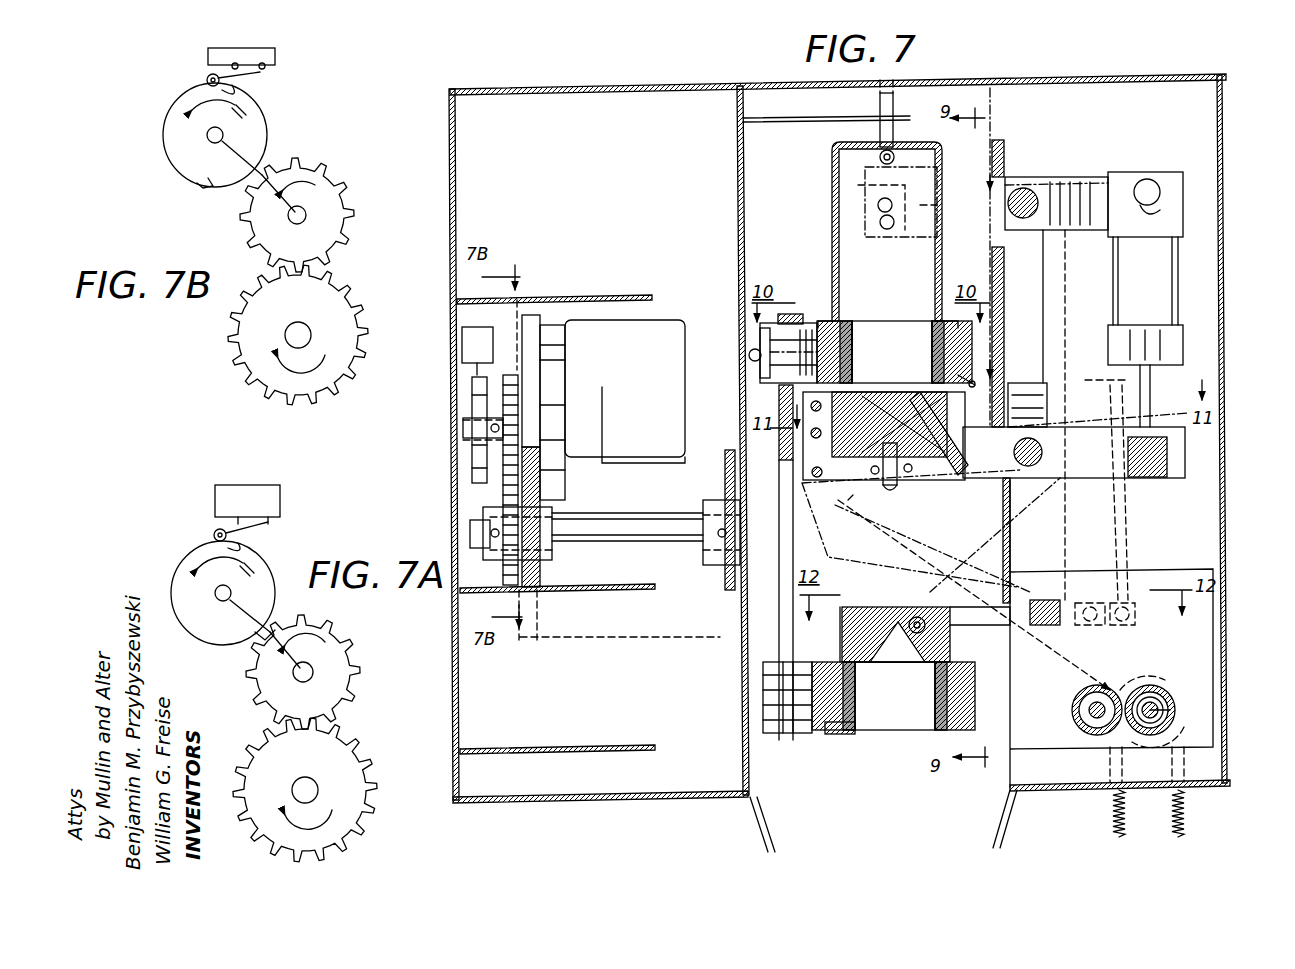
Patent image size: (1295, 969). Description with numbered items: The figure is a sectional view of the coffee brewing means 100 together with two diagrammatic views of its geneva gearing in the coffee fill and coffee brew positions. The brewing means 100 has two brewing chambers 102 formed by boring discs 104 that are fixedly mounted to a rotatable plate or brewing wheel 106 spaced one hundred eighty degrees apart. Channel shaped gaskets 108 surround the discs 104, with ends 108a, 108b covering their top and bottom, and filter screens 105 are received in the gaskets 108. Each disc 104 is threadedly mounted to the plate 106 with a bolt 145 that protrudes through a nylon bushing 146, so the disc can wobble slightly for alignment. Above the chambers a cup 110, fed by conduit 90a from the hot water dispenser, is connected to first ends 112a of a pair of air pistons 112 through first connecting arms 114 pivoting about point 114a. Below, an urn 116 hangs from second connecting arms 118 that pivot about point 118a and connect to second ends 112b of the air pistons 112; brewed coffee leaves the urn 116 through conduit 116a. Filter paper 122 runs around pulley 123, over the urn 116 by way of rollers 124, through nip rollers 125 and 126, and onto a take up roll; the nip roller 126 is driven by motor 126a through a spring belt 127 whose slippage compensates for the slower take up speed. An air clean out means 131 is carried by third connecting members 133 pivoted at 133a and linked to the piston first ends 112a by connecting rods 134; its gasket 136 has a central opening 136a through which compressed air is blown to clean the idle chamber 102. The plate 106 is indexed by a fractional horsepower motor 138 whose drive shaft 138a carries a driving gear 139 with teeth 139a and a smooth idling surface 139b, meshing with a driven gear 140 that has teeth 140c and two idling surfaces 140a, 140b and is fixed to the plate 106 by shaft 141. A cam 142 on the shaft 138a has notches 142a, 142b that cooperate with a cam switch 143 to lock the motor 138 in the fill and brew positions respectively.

In FIG. 7, the brewing means 100 is at (630, 84).
In FIG. 7, the brewing chamber 102 is at (885, 318).
In FIG. 7, the disc 104 is at (975, 340).
In FIG. 7, the filter screen 105 is at (880, 676).
In FIG. 7, the plate or brewing wheel 106 is at (793, 520).
In FIG. 7, the channel shaped gasket 108 is at (858, 325).
In FIG. 7, the gasket end 108a is at (808, 318).
In FIG. 7, the gasket end 108b is at (990, 398).
In FIG. 7, the cup 110 is at (832, 166).
In FIG. 7, the air piston 112 is at (1180, 272).
In FIG. 7, the first end of air piston 112a is at (1150, 180).
In FIG. 7, the second end of air piston 112b is at (1190, 380).
In FIG. 7, the first connecting arm 114 is at (1090, 176).
In FIG. 7, the pivot point 114a is at (1027, 190).
In FIG. 7, the urn 116 is at (940, 432).
In FIG. 7, the conduit 116a is at (983, 485).
In FIG. 7, the second connecting arm 118 is at (1074, 452).
In FIG. 7, the pivot point 118a is at (1030, 466).
In FIG. 7, the filter paper 122 is at (940, 548).
In FIG. 7, the pulley 123 is at (1000, 383).
In FIG. 7, the roller 124 is at (812, 472).
In FIG. 7, the nip roller 125 is at (1072, 694).
In FIG. 7, the nip roller 126 is at (1160, 688).
In FIG. 7, the motor 126a is at (1175, 712).
In FIG. 7, the spring belt 127 is at (1110, 768).
In FIG. 7, the air clean out means 131 is at (920, 616).
In FIG. 7, the third connecting member 133 is at (926, 634).
In FIG. 7, the pivot 133a is at (1058, 628).
In FIG. 7, the connecting rod 134 is at (1122, 522).
In FIG. 7, the gasket 136 is at (850, 655).
In FIG. 7, the opening 136a is at (888, 660).
In FIG. 7, the fractional horsepower motor 138 is at (612, 410).
In FIG. 7, the drive shaft 138a is at (545, 395).
In FIG. 7, the driving gear 139 is at (487, 395).
In FIG. 7B, the driving gear 139 is at (297, 215).
In FIG. 7A, the driving gear 139 is at (303, 672).
In FIG. 7B, the teeth 139a is at (338, 175).
In FIG. 7A, the teeth 139a is at (345, 637).
In FIG. 7B, the smooth idling surface 139b is at (352, 222).
In FIG. 7A, the smooth idling surface 139b is at (255, 688).
In FIG. 7, the driven gear 140 is at (503, 490).
In FIG. 7B, the driven gear 140 is at (298, 335).
In FIG. 7A, the driven gear 140 is at (305, 790).
In FIG. 7B, the smooth idling surface 140a is at (305, 400).
In FIG. 7A, the smooth idling surface 140a is at (345, 840).
In FIG. 7B, the smooth idling surface 140b is at (300, 270).
In FIG. 7A, the smooth idling surface 140b is at (268, 735).
In FIG. 7B, the teeth 140c is at (250, 385).
In FIG. 7A, the teeth 140c is at (350, 735).
In FIG. 7, the shaft 141 is at (660, 510).
In FIG. 7, the cam 142 is at (479, 400).
In FIG. 7B, the cam 142 is at (215, 135).
In FIG. 7A, the cam 142 is at (223, 593).
In FIG. 7B, the notch 142a is at (195, 185).
In FIG. 7A, the notch 142a is at (245, 548).
In FIG. 7B, the notch 142b is at (250, 96).
In FIG. 7A, the notch 142b is at (270, 632).
In FIG. 7, the cam switch 143 is at (462, 345).
In FIG. 7B, the cam switch 143 is at (208, 60).
In FIG. 7A, the cam switch 143 is at (280, 493).
In FIG. 7, the bolt 145 is at (760, 383).
In FIG. 7, the nylon bushing 146 is at (760, 342).
In FIG. 7, the conduit 90a is at (878, 148).